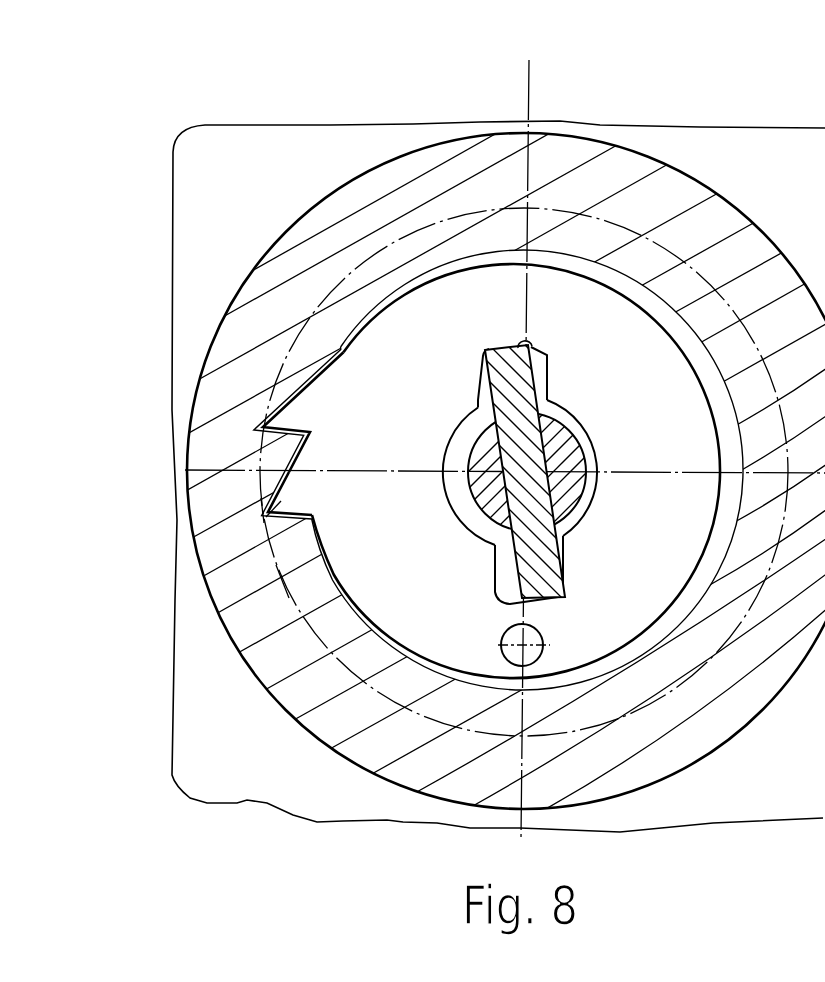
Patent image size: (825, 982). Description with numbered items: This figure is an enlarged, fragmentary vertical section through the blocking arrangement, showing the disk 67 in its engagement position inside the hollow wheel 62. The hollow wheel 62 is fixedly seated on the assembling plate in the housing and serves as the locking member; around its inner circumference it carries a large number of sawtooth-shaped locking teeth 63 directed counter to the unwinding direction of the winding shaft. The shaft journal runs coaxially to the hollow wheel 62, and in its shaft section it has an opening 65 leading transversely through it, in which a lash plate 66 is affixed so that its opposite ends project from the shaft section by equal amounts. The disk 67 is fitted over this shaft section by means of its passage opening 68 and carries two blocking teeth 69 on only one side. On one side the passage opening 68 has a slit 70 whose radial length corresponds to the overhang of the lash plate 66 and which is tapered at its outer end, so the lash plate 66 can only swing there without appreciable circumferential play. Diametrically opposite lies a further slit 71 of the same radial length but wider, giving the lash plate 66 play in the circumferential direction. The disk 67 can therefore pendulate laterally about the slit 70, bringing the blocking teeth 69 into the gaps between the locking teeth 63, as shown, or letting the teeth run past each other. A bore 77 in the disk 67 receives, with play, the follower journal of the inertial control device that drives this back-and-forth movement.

The hollow wheel 62 is at (613, 170).
The locking teeth 63 is at (292, 455).
The opening 65 is at (547, 405).
The lash plate 66 is at (515, 387).
The disk 67 is at (656, 546).
The passage opening 68 is at (593, 450).
The blocking teeth 69 is at (268, 512).
The slit 70 is at (480, 383).
The further slit 71 is at (493, 583).
The bore 77 is at (533, 655).